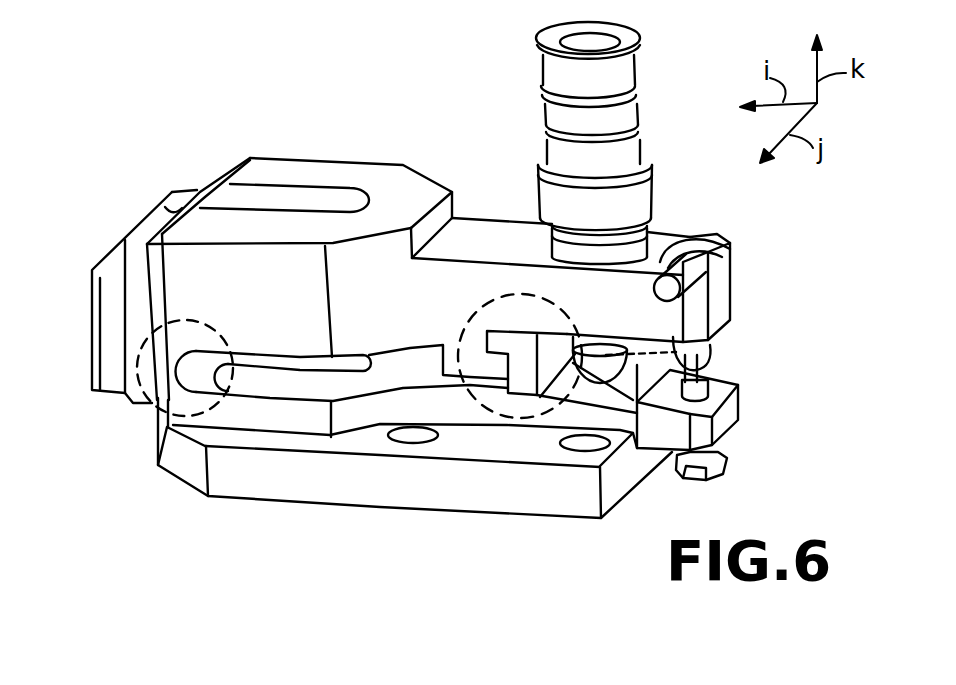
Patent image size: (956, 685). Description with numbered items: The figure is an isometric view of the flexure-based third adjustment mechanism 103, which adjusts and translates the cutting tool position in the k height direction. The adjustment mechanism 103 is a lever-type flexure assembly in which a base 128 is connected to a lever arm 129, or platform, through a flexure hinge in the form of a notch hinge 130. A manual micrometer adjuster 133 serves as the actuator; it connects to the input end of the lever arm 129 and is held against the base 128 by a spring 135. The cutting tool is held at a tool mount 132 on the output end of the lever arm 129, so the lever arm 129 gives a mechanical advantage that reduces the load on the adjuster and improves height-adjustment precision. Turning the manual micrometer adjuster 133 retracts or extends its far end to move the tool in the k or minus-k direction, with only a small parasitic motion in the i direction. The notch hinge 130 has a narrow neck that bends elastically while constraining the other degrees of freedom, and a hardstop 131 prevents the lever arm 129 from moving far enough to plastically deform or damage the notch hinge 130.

The third adjustment mechanism 103 is at (335, 62).
The base 128 is at (722, 420).
The lever arm 129 is at (406, 190).
The notch hinge 130 is at (147, 424).
The hardstop 131 is at (486, 412).
The tool mount 132 is at (92, 331).
The manual micrometer adjuster 133 is at (550, 158).
The spring 135 is at (712, 339).